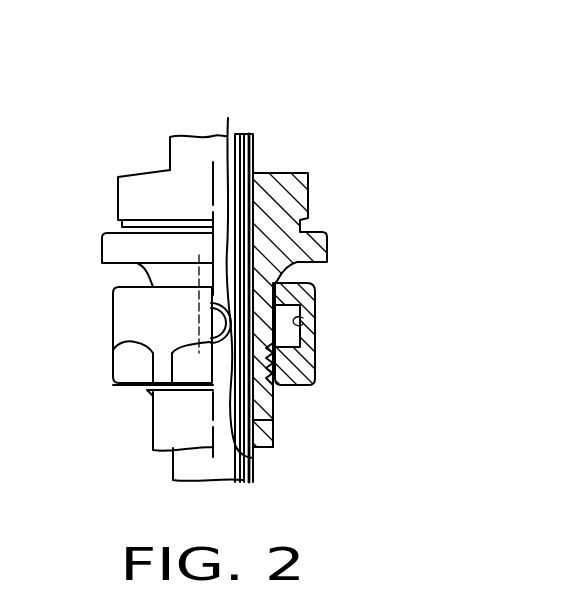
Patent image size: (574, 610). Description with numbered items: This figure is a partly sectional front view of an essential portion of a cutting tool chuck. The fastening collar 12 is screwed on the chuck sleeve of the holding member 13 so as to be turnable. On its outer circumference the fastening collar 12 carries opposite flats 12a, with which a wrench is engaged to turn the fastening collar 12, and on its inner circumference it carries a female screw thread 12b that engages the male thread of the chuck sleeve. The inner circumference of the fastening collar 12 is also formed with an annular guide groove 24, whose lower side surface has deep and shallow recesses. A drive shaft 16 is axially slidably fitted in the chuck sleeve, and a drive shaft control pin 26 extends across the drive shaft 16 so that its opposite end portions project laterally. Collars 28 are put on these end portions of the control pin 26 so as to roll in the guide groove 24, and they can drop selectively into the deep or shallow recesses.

The drive shaft control pin 26 is at (227, 150).
The holding member 13 is at (308, 190).
The fastening collar 12 is at (313, 297).
The annular guide groove 24 is at (303, 322).
The female screw thread 12b is at (273, 396).
The drive shaft 16 is at (273, 420).
The collars 28 is at (253, 458).
The flats 12a is at (133, 372).